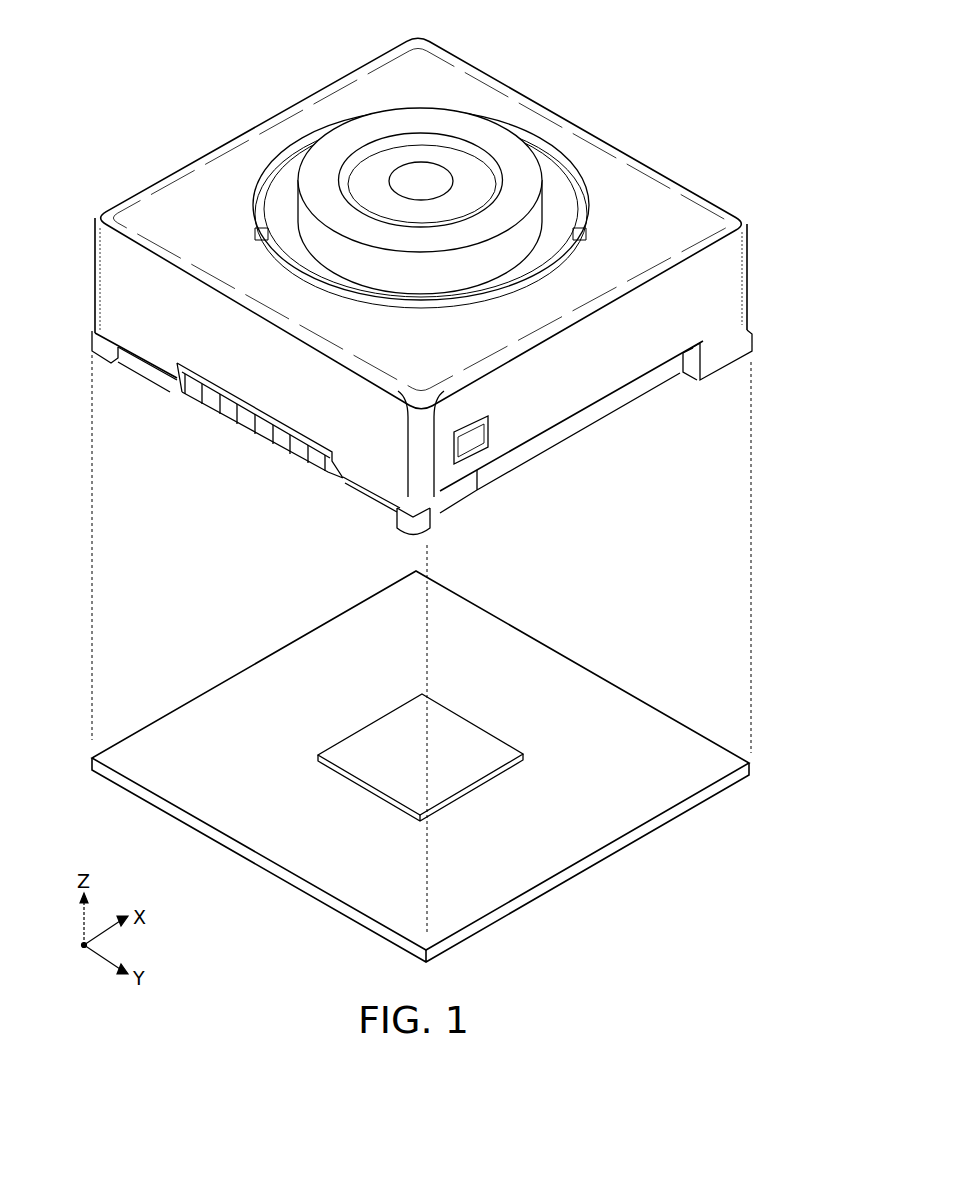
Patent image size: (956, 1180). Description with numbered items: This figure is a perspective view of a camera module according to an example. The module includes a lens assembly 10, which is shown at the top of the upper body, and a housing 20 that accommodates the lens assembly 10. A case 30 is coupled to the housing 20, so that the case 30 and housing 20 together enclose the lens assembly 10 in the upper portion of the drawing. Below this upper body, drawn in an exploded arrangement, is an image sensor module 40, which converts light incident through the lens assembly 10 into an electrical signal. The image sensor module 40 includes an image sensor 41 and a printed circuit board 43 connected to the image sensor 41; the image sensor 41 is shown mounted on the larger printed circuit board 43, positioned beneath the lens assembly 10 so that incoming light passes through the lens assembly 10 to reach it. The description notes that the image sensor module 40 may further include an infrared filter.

The lens assembly 10 is at (486, 136).
The housing 20 is at (720, 362).
The case 30 is at (720, 288).
The image sensor module 40 is at (420, 745).
The image sensor 41 is at (467, 742).
The printed circuit board 43 is at (586, 705).